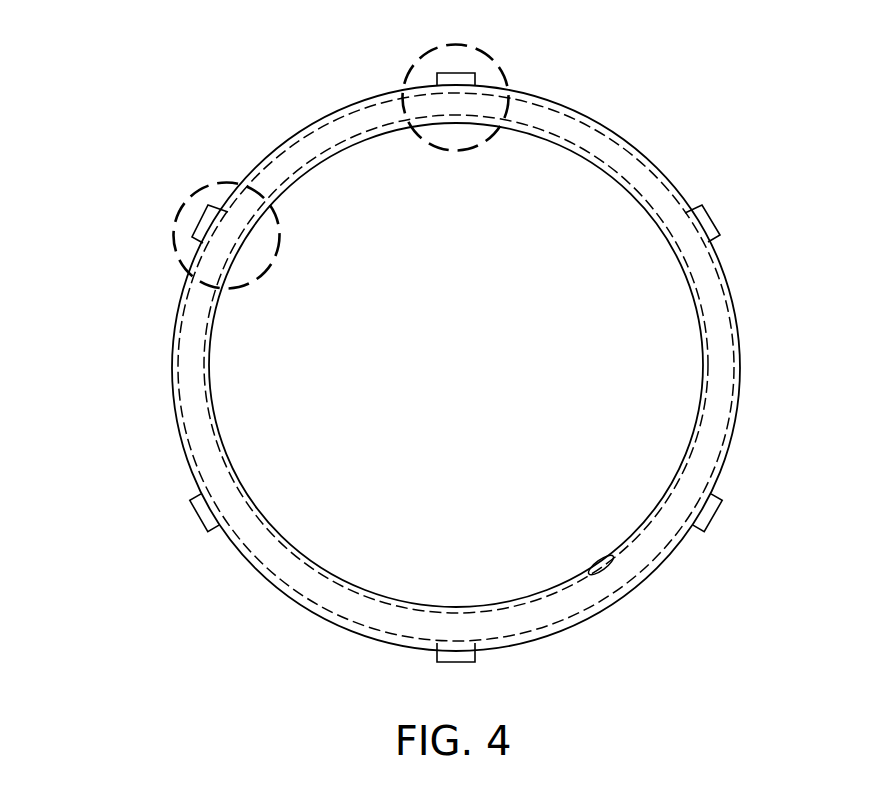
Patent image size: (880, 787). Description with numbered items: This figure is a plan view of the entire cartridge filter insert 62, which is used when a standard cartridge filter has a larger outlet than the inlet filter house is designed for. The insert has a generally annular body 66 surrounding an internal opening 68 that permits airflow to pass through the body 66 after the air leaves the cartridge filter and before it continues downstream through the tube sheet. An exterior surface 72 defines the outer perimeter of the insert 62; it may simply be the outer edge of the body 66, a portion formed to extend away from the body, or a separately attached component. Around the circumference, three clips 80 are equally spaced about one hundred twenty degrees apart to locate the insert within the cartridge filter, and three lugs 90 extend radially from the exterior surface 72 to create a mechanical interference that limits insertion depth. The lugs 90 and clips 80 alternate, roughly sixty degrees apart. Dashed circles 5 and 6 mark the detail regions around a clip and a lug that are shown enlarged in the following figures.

The cartridge filter insert 62 is at (148, 448).
The body 66 is at (543, 645).
The exterior surface 72 is at (303, 610).
The clip 80 is at (460, 73).
The lug 90 is at (200, 212).
The internal opening 68 is at (567, 518).
The detail region shown in FIG. 5 is at (418, 61).
The detail region shown in FIG. 6 is at (174, 240).